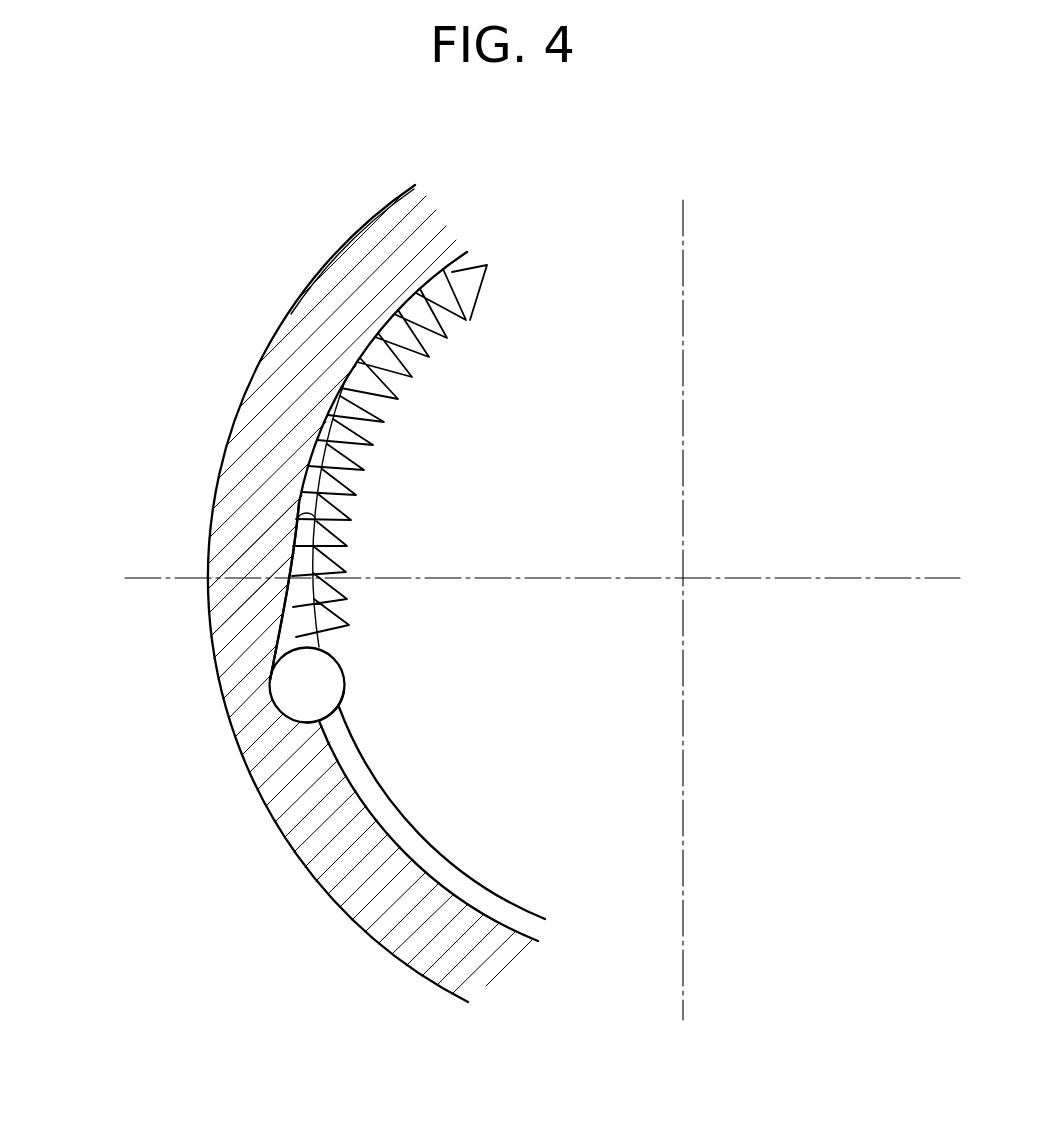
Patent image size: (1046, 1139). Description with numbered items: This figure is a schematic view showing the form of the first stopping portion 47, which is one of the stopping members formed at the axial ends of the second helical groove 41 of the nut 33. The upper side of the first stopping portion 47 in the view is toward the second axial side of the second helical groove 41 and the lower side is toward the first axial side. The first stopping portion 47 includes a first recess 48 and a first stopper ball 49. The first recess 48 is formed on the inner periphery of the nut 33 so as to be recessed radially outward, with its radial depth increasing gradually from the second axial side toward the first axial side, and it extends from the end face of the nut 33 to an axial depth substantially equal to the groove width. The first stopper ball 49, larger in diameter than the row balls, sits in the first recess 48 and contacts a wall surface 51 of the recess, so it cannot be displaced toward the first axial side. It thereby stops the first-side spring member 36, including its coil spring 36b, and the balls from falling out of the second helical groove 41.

The nut 33 is at (298, 337).
The second helical groove 41 is at (427, 347).
The coil spring 36b is at (370, 455).
The first-side spring member 36 is at (461, 650).
The first recess 48 is at (283, 588).
The first stopping portion 47 is at (247, 635).
The first stopper ball 49 is at (288, 695).
The wall surface 51 is at (303, 722).